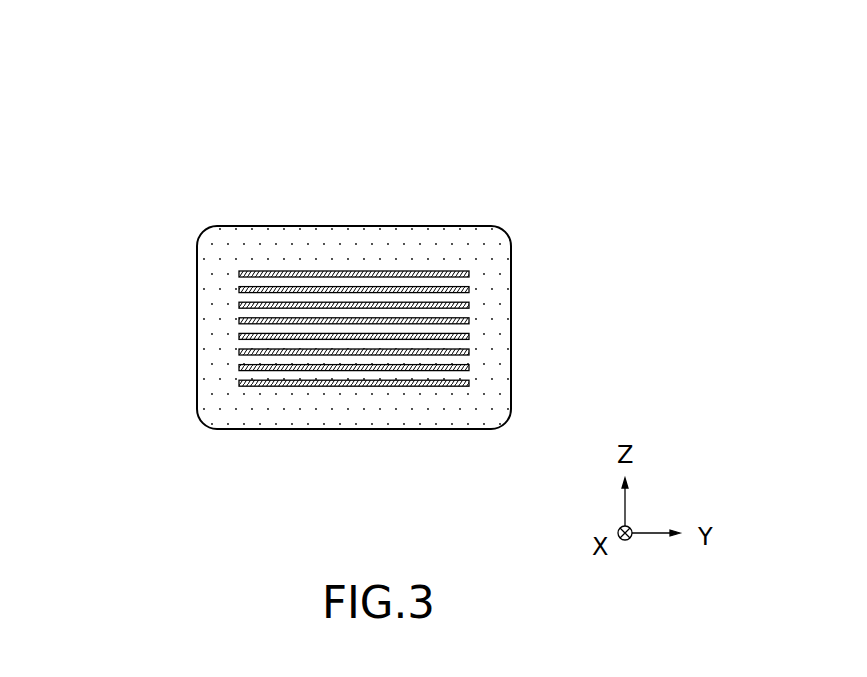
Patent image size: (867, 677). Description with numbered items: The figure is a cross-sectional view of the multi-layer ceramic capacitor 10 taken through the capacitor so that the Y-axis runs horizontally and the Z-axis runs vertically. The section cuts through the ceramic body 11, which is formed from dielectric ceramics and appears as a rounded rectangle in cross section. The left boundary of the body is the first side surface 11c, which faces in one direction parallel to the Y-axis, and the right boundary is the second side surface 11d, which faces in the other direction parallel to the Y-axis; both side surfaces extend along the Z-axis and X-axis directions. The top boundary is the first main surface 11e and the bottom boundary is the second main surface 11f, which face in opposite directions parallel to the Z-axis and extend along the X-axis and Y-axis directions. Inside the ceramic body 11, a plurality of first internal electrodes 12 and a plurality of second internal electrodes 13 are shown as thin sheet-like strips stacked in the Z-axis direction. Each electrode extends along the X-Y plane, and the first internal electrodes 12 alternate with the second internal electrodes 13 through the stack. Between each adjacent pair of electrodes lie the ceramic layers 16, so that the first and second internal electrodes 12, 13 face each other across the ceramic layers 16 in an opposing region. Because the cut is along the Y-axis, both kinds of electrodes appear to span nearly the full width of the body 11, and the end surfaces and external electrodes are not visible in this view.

The multi-layer ceramic capacitor 10 is at (170, 142).
The ceramic body 11 is at (400, 168).
The first side surface 11c is at (197, 330).
The second side surface 11d is at (513, 335).
The first main surface 11e is at (350, 226).
The second main surface 11f is at (348, 430).
The first internal electrodes 12 is at (247, 349).
The second internal electrodes 13 is at (390, 380).
The ceramic layers 16 is at (470, 328).